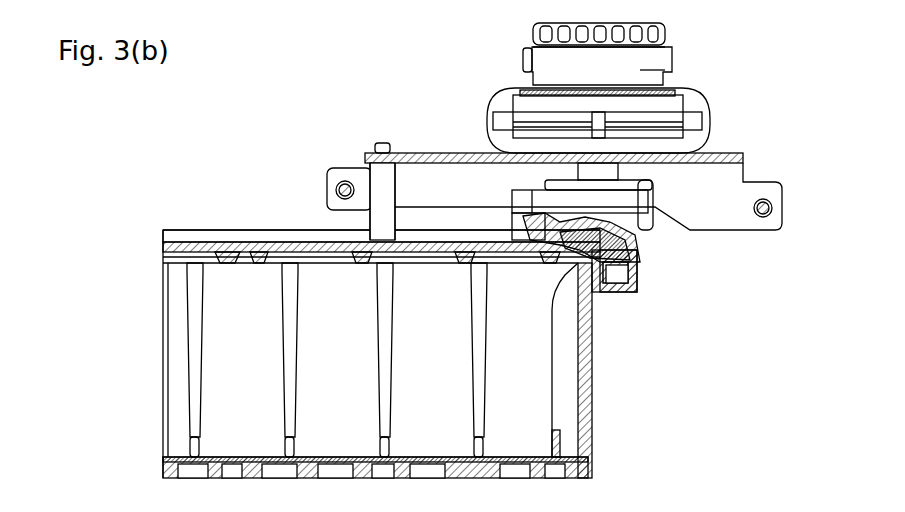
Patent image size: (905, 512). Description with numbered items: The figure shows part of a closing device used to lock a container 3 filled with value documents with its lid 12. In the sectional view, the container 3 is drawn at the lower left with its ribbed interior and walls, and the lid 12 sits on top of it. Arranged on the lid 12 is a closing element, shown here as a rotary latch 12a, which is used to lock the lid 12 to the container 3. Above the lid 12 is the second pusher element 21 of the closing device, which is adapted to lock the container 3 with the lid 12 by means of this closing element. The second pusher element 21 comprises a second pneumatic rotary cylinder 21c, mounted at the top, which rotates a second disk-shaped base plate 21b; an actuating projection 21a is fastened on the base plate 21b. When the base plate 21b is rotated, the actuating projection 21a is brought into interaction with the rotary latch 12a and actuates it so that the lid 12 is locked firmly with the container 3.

The container 3 is at (592, 340).
The lid 12 is at (257, 242).
The rotary latch 12a is at (508, 226).
The second pusher element 21 is at (452, 102).
The actuating projection 21a is at (505, 197).
The second disk-shaped base plate 21b is at (648, 240).
The second pneumatic rotary cylinder 21c is at (668, 60).